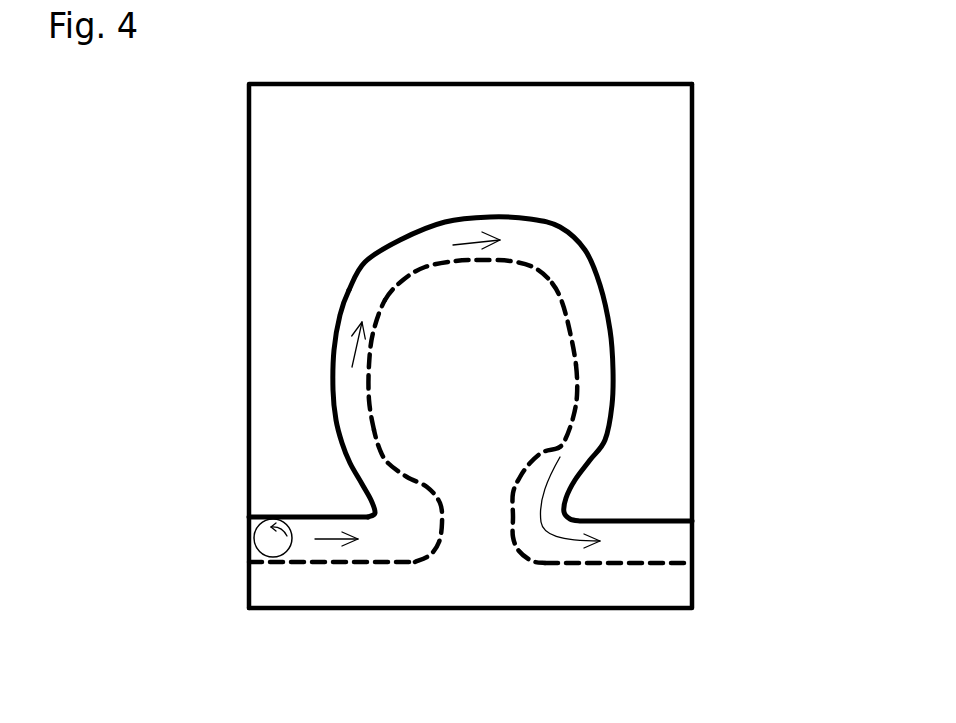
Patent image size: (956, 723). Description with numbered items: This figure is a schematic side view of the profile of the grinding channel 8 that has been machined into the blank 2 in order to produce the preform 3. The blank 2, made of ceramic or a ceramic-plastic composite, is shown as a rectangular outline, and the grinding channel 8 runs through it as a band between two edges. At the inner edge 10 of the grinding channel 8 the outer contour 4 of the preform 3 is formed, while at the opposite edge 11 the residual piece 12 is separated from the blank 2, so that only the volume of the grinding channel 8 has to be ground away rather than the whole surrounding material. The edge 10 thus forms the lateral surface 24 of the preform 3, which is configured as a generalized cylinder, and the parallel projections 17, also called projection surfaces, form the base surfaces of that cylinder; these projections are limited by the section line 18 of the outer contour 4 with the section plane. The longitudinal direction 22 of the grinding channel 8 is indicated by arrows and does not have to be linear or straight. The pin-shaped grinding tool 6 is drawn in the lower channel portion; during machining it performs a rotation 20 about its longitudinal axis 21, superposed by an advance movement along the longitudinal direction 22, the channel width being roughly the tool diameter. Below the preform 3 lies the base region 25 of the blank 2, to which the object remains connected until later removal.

The blank 2 is at (668, 225).
The preform 3 is at (533, 382).
The outer contour 4 is at (572, 415).
The grinding tool 6 is at (258, 549).
The grinding channel 8 is at (380, 540).
The edge of the grinding channel 10 is at (370, 398).
The opposite edge of the grinding channel 11 is at (335, 355).
The residual piece 12 is at (285, 150).
The parallel projection 17 is at (517, 307).
The section line 18 is at (570, 332).
The rotation 20 is at (276, 518).
The longitudinal axis 21 is at (273, 539).
The longitudinal direction of the grinding channel 22 is at (472, 243).
The lateral surface 24 is at (693, 282).
The base region 25 is at (476, 570).